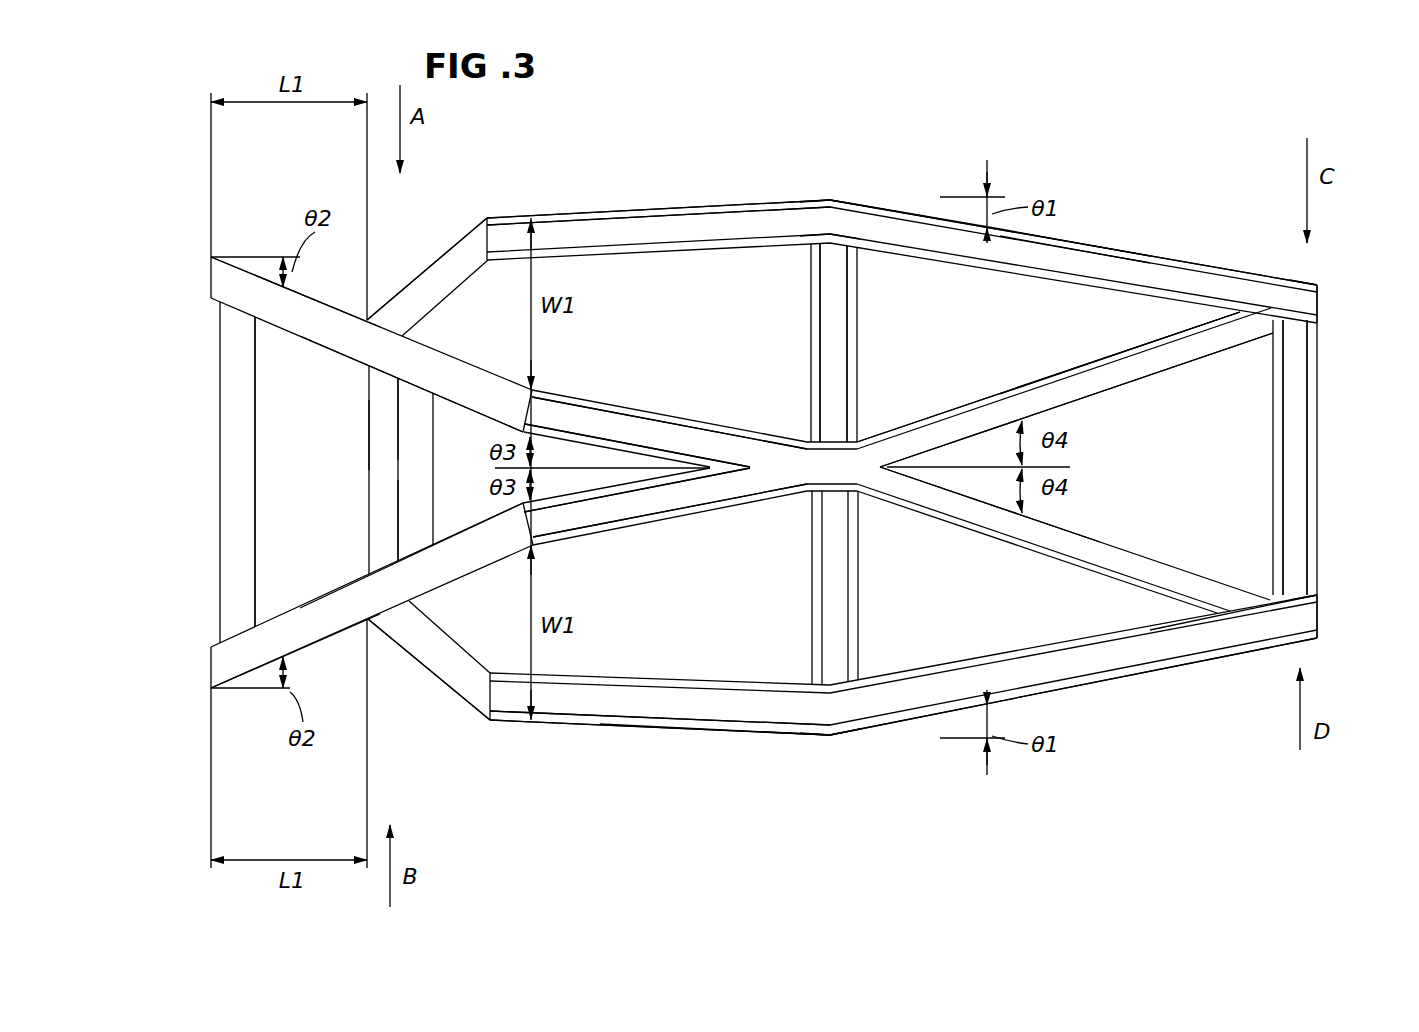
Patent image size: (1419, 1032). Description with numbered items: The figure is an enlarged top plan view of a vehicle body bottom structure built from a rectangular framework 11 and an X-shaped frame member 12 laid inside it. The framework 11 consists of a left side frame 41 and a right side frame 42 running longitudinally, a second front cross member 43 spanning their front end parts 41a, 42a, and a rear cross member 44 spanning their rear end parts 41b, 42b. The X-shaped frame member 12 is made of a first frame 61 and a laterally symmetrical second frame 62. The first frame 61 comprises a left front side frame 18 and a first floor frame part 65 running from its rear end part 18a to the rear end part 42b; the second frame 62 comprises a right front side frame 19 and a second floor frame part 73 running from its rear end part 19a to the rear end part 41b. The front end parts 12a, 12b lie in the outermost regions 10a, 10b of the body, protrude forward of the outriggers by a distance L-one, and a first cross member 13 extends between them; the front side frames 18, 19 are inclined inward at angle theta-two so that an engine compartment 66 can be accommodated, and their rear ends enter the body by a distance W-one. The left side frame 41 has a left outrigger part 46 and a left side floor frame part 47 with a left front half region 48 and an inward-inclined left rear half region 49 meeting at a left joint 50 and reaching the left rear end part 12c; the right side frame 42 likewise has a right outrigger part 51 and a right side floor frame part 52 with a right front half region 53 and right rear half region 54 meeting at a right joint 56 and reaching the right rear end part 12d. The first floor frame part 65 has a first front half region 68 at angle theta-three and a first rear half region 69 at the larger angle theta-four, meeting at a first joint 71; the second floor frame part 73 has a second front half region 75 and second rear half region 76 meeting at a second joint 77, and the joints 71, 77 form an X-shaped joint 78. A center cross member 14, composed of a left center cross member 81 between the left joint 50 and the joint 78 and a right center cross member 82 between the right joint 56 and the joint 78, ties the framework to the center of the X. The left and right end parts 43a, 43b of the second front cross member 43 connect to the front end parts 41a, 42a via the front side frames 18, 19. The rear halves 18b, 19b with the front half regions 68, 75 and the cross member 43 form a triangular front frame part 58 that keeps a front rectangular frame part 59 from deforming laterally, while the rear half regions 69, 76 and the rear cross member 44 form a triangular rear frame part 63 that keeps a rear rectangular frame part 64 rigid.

The outermost region on the left side of the vehicle body 10a is at (540, 722).
The outermost region on the right side of the vehicle body 10b is at (575, 216).
The rectangular framework 11 is at (941, 171).
The X-shaped frame member 12 is at (1128, 345).
The left front end part of the X-shaped frame member 12a is at (297, 612).
The right front end part of the X-shaped frame member 12b is at (300, 328).
The left rear end part of the X-shaped frame member 12c is at (1220, 600).
The right rear end part of the X-shaped frame member 12d is at (1236, 312).
The first cross member 13 is at (232, 492).
The center cross member 14 is at (804, 299).
The left front side frame 18 is at (328, 655).
The rear end part of the left front side frame 18a is at (502, 544).
The rear half of the left front side frame 18b is at (437, 570).
The right front side frame 19 is at (344, 308).
The rear end part of the right front side frame 19a is at (512, 392).
The rear half of the right front side frame 19b is at (447, 372).
The left side frame 41 is at (735, 822).
The front end part of the left side frame 41a is at (382, 625).
The rear end part of the left side frame 41b is at (1306, 621).
The right side frame 42 is at (797, 112).
The front end part of the right side frame 42a is at (383, 313).
The rear end part of the right side frame 42b is at (1305, 300).
The second front cross member 43 is at (398, 483).
The left end part of the second front cross member 43a is at (406, 534).
The right end of the second front cross member 43b is at (407, 388).
The rear cross member 44 is at (1302, 460).
The left outrigger part 46 is at (425, 657).
The left side floor frame part 47 is at (734, 734).
The left front half region 48 is at (613, 722).
The left rear half region 49 is at (1062, 680).
The left joint 50 is at (835, 740).
The right outrigger part 51 is at (447, 265).
The right side floor frame part 52 is at (752, 192).
The right front half region 53 is at (630, 225).
The right rear half region 54 is at (1092, 238).
The right joint 56 is at (840, 192).
The triangular front frame part 58 is at (388, 435).
The front rectangular frame part 59 is at (798, 192).
The first frame 61 is at (601, 562).
The second frame 62 is at (601, 364).
The triangular rear frame part 63 is at (1323, 394).
The rear rectangular frame part 64 is at (1080, 245).
The first floor frame part 65 is at (668, 536).
The engine compartment 66 is at (268, 396).
The first front half region 68 is at (725, 506).
The first rear half region 69 is at (1060, 385).
The first joint 71 is at (830, 480).
The second floor frame part 73 is at (669, 404).
The second front half region 75 is at (728, 434).
The second rear half region 76 is at (1068, 552).
The second joint 77 is at (830, 468).
The X-shaped joint 78 is at (930, 582).
The left center cross member 81 is at (845, 628).
The right center cross member 82 is at (838, 350).